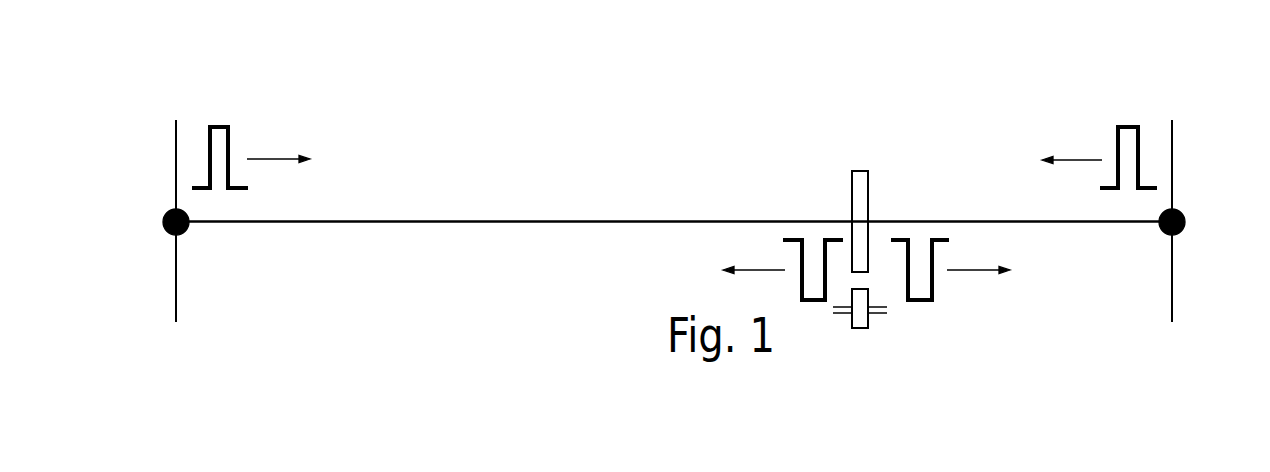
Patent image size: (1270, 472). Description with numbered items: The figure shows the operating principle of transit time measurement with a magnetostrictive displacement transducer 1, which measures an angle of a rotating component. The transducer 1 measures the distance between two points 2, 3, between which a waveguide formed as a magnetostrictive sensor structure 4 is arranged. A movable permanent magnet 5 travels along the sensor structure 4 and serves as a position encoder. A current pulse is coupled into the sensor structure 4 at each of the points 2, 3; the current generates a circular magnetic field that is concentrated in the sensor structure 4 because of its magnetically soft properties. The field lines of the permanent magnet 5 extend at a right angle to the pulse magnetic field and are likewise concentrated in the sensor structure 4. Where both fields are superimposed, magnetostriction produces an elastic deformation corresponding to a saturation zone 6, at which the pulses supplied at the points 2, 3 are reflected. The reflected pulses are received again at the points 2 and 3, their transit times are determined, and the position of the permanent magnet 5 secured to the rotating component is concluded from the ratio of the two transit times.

The magnetostrictive displacement transducer 1 is at (1092, 88).
The point 2 is at (152, 185).
The point 3 is at (1198, 190).
The magnetostrictive sensor structure 4 is at (418, 222).
The permanent magnet 5 is at (872, 320).
The saturation zone 6 is at (895, 155).